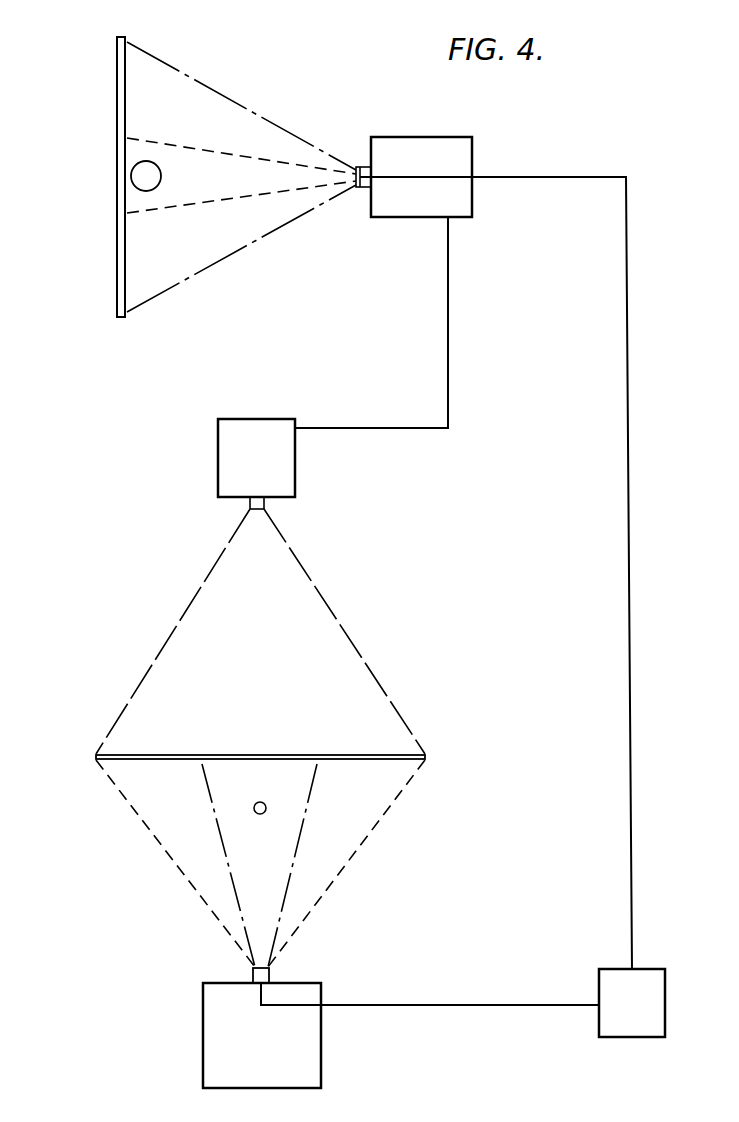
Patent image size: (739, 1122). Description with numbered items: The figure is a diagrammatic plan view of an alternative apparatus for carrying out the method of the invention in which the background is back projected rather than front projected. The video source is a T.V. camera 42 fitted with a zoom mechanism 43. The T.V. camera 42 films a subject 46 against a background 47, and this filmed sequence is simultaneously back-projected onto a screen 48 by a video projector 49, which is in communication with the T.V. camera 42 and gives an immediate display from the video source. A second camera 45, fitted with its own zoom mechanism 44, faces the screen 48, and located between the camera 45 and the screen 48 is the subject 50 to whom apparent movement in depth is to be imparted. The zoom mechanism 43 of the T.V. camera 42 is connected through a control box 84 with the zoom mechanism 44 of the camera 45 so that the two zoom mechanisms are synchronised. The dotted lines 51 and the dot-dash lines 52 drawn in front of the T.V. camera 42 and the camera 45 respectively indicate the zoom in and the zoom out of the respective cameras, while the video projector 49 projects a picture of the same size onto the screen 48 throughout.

The T.V. camera 42 is at (425, 137).
The zoom mechanism 43 is at (360, 167).
The zoom mechanism 44 is at (253, 975).
The camera 45 is at (243, 1053).
The subject 46 is at (136, 177).
The background 47 is at (117, 97).
The screen 48 is at (392, 752).
The video projector 49 is at (236, 467).
The subject 50 is at (257, 802).
The dotted lines 51 is at (147, 138).
The dot-dash lines 52 is at (257, 112).
The control box 84 is at (618, 1017).